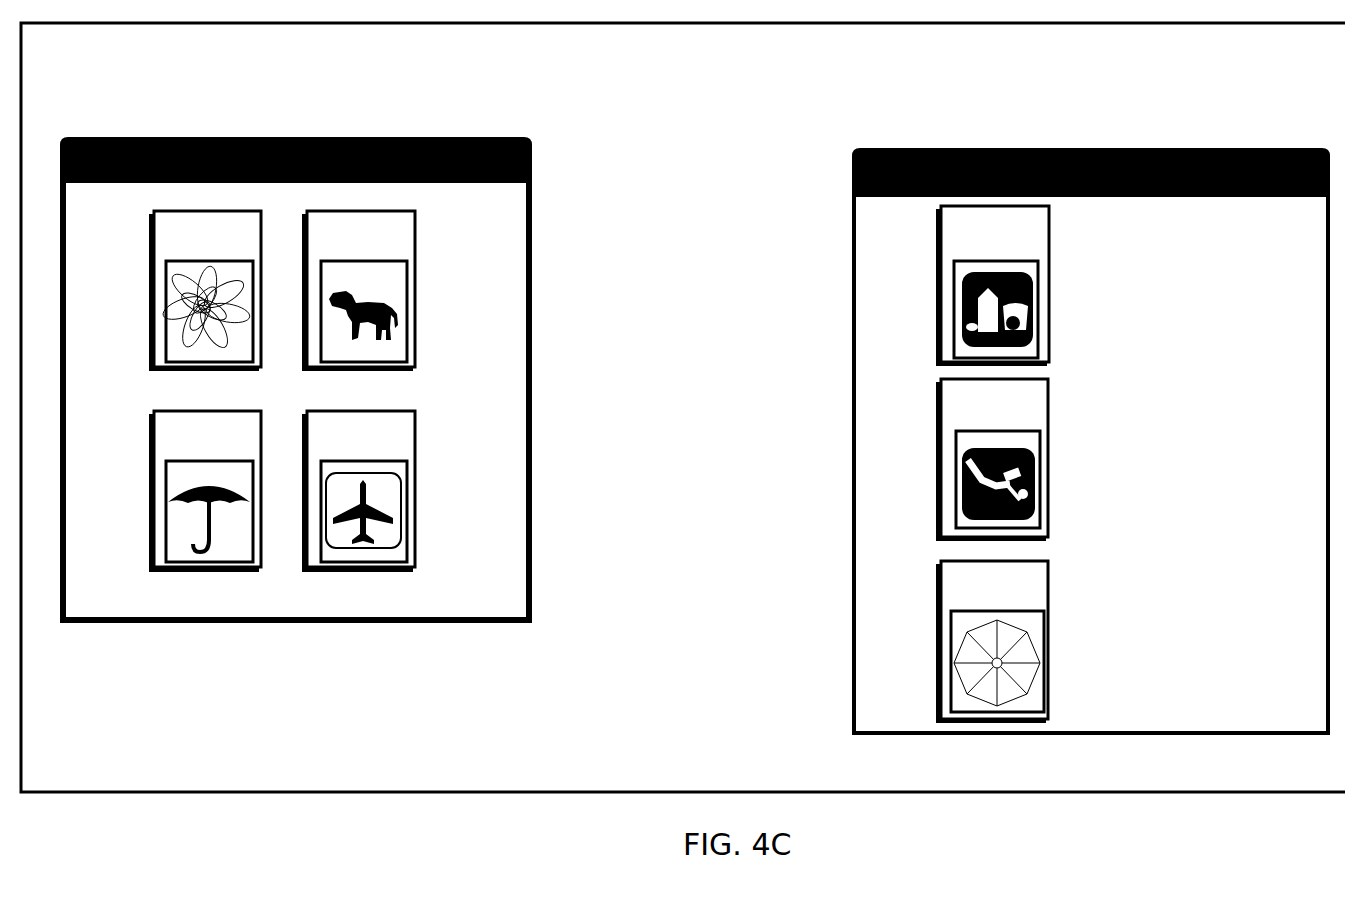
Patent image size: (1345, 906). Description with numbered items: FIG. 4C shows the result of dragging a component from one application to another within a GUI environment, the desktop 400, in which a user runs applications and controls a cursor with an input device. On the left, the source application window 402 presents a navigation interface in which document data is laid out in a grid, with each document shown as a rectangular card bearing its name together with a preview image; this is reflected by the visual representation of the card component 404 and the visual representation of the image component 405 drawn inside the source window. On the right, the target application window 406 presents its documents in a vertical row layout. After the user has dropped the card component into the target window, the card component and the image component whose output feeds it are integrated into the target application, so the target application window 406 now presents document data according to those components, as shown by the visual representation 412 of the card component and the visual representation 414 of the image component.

The desktop 400 is at (1314, 785).
The source application window 402 is at (488, 137).
The visual representation of the card component 404 is at (322, 211).
The visual representation of the image component 405 is at (408, 345).
The target application window 406 is at (1032, 148).
The visual representation of the card component 412 is at (940, 272).
The visual representation of the image component 414 is at (940, 358).